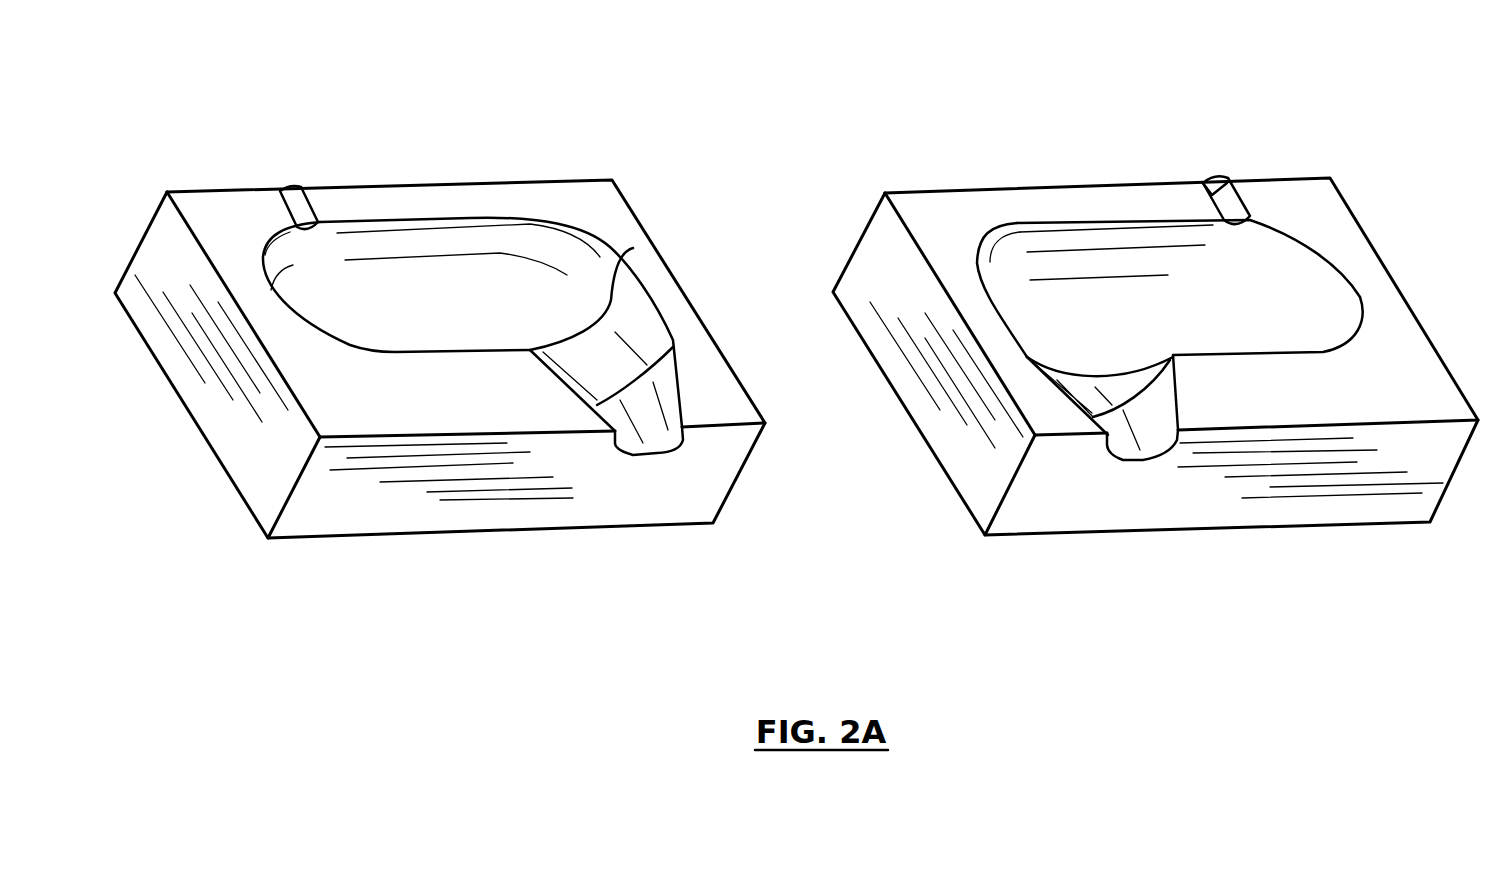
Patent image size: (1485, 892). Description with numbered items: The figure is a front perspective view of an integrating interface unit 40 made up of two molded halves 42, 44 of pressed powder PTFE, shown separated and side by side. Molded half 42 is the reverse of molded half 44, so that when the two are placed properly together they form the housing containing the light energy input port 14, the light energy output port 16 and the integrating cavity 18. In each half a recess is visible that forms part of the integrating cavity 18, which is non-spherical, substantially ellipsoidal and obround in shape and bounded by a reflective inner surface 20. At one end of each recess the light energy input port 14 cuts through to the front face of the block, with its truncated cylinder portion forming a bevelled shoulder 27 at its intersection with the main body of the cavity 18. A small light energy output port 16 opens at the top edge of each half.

The integrating interface unit 40 is at (797, 57).
The molded half 42 is at (388, 534).
The molded half 44 is at (1267, 528).
The integrating cavity 18 is at (412, 258).
The reflective inner surface 20 is at (462, 301).
The bevelled shoulder 27 is at (613, 257).
The light energy input port 14 is at (570, 387).
The light energy output port 16 is at (313, 200).